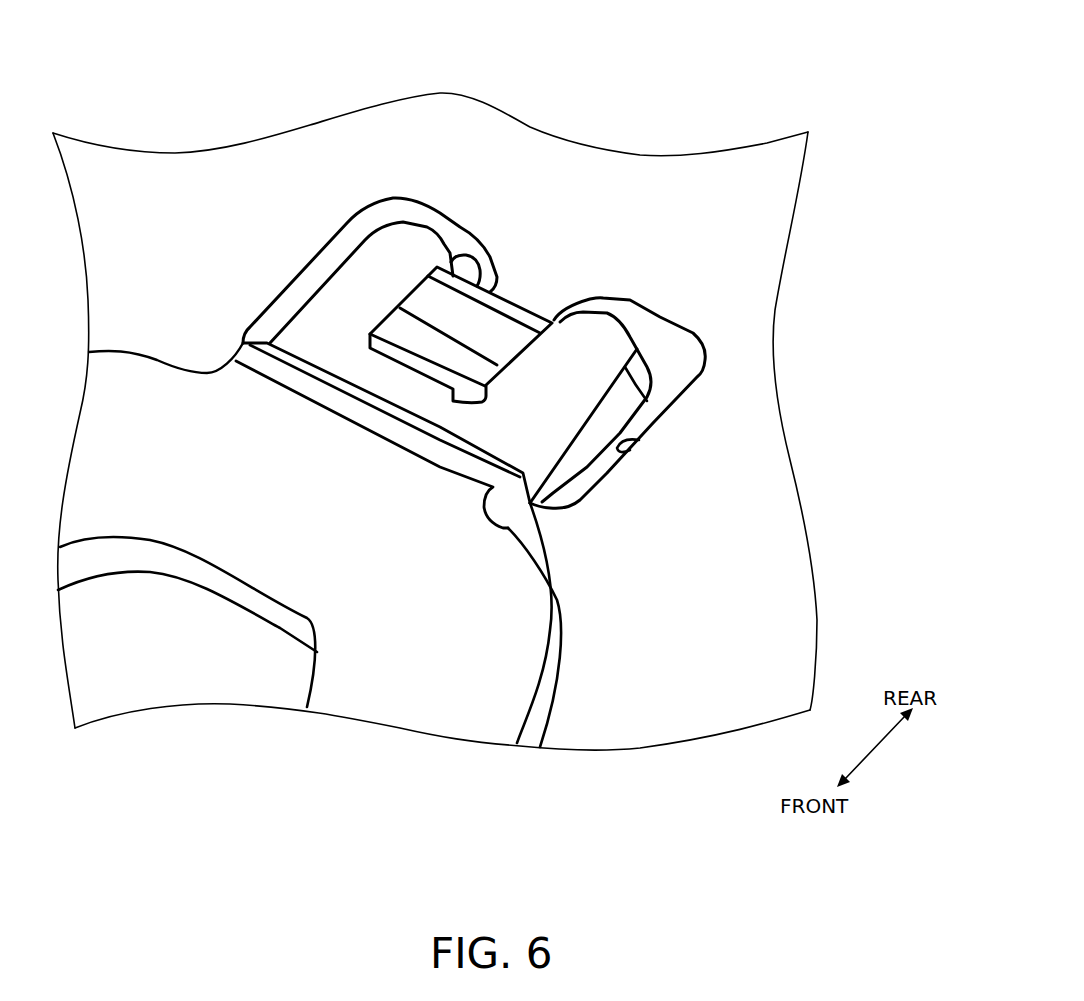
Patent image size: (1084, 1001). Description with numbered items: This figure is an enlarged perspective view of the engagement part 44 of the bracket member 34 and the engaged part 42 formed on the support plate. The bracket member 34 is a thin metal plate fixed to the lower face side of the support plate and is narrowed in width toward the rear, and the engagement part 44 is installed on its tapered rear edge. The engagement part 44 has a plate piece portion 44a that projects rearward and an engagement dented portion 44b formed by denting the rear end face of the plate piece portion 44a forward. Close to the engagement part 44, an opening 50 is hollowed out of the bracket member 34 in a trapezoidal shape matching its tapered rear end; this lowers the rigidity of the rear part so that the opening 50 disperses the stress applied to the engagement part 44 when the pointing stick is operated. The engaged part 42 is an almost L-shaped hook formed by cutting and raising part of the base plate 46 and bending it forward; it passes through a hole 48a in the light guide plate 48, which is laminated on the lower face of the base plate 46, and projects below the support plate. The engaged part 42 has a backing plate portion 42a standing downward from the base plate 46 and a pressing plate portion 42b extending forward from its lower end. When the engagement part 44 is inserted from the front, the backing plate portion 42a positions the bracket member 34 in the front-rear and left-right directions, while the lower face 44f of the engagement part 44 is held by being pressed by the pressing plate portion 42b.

The bracket member 34 is at (415, 696).
The engaged part 42 is at (451, 205).
The backing plate portion 42a is at (492, 288).
The pressing plate portion 42b is at (393, 325).
The engagement part 44 is at (735, 386).
The plate piece portion 44a is at (603, 350).
The engagement dented portion 44b is at (570, 310).
The lower face 44f is at (563, 393).
The base plate 46 is at (402, 213).
The light guide plate 48 is at (767, 570).
The hole 48a is at (618, 452).
The opening 50 is at (205, 682).